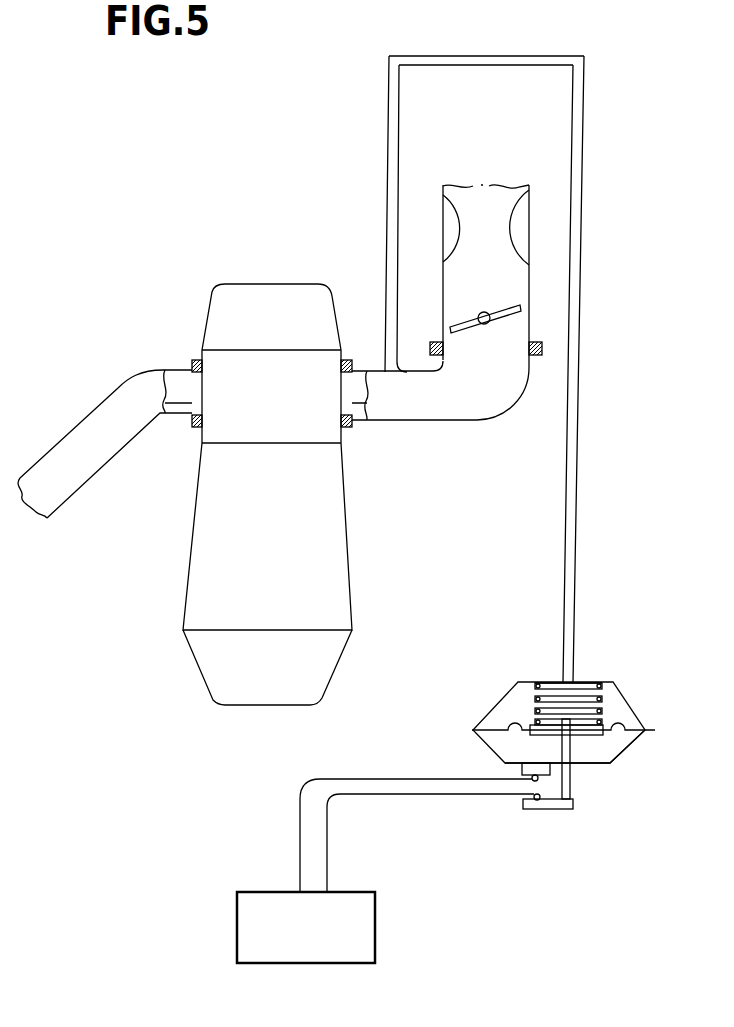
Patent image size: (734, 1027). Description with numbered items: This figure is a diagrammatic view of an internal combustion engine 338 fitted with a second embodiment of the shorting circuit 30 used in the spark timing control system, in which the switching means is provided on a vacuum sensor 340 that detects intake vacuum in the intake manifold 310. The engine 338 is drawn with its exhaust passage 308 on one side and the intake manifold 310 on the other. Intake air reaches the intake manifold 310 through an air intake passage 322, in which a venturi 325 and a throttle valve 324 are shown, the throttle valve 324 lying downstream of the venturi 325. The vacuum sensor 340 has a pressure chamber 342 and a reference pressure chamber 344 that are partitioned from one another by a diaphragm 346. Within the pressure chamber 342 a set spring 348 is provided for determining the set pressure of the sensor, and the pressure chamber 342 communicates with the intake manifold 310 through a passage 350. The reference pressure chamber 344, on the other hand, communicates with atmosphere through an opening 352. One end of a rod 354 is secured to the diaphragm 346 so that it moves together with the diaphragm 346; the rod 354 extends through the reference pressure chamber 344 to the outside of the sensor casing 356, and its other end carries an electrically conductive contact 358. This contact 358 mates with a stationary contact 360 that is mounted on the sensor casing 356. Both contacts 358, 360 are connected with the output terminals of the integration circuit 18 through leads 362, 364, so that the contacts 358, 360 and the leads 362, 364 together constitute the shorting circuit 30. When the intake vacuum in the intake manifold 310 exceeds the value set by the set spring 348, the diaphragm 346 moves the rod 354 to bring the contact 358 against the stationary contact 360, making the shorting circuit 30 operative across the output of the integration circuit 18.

The integration circuit 18 is at (375, 930).
The shorting circuit 30 is at (455, 803).
The exhaust passage 308 is at (127, 447).
The intake manifold 310 is at (427, 421).
The air intake passage 322 is at (530, 268).
The throttle valve 324 is at (500, 322).
The venturi 325 is at (488, 231).
The internal combustion engine 338 is at (335, 533).
The vacuum sensor 340 is at (620, 679).
The pressure chamber 342 is at (620, 710).
The reference pressure chamber 344 is at (617, 748).
The diaphragm 346 is at (497, 728).
The set spring 348 is at (578, 698).
The passage 350 is at (578, 490).
The opening 352 is at (500, 742).
The rod 354 is at (565, 786).
The sensor casing 356 is at (530, 682).
The electrically conductive contact 358 is at (537, 810).
The stationary contact 360 is at (532, 781).
The lead 362 is at (373, 795).
The lead 364 is at (365, 779).